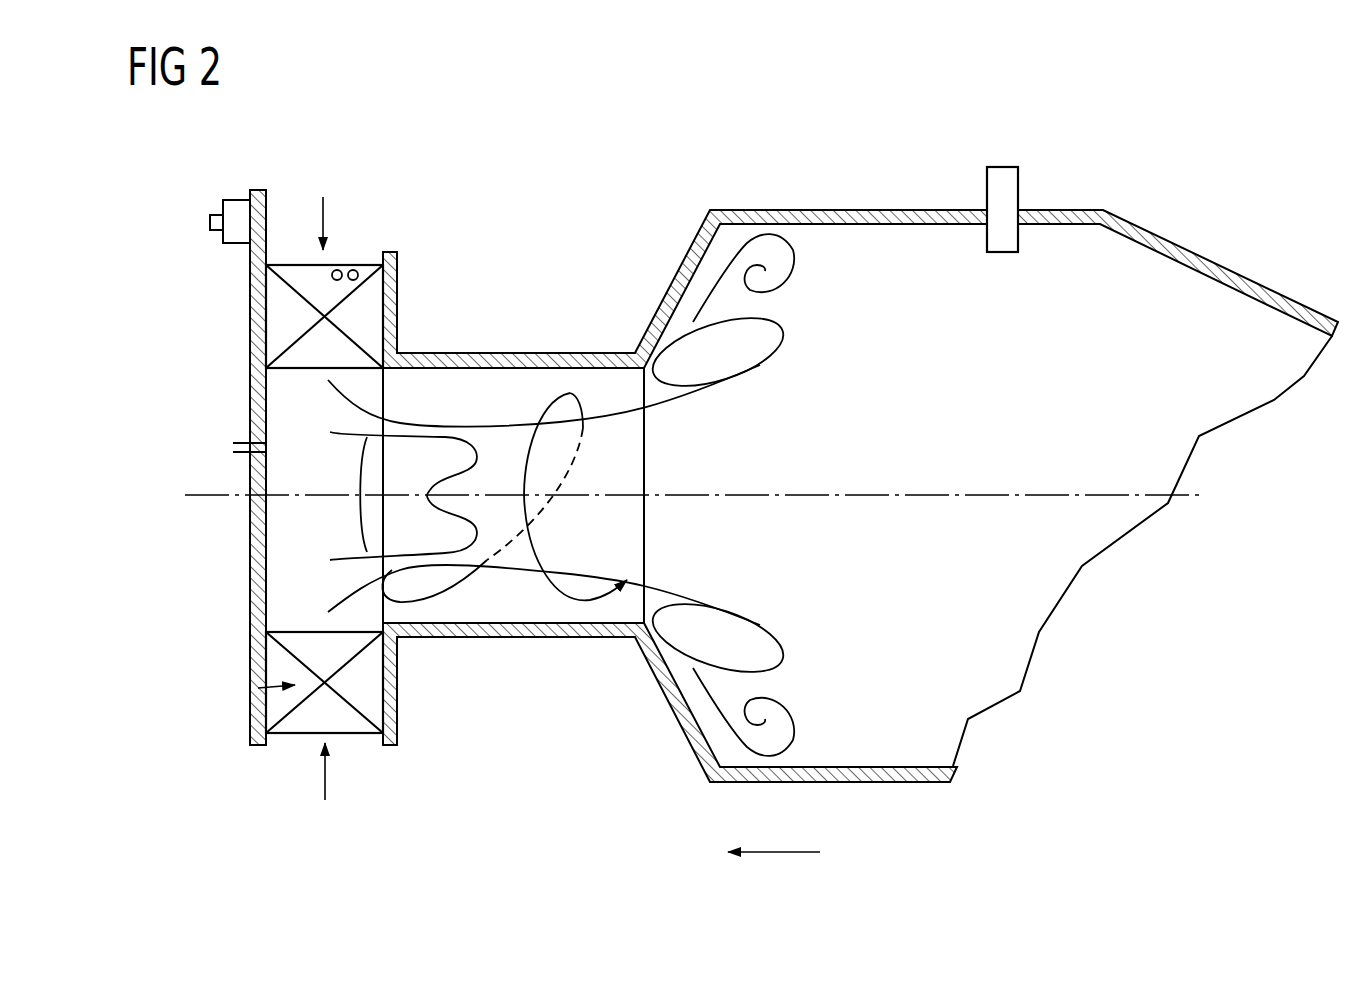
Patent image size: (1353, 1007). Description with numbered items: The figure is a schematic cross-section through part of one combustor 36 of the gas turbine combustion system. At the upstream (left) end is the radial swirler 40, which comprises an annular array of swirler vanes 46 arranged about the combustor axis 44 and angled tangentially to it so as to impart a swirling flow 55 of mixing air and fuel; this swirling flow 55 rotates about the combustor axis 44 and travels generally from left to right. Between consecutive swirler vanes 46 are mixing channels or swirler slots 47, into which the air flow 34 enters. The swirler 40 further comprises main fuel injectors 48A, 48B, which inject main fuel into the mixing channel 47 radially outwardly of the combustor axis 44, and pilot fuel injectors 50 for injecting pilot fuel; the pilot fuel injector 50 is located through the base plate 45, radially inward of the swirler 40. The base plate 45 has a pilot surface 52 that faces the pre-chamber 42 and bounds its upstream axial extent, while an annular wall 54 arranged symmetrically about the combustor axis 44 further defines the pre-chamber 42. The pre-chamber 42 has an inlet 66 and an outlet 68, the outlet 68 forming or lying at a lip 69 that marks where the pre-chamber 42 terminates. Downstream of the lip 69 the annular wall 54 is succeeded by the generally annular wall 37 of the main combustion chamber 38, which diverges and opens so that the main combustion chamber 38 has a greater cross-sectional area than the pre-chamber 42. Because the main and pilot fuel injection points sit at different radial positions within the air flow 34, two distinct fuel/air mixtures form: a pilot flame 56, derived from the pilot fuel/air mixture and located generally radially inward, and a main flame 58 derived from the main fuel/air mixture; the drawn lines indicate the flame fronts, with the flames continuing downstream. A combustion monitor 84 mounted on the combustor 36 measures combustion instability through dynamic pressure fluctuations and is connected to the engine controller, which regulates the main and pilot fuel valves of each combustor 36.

The air flow 34 is at (323, 200).
The combustor 36 is at (1240, 215).
The annular wall of the main combustion chamber 37 is at (855, 783).
The main combustion chamber 38 is at (904, 305).
The radial swirler 40 is at (258, 688).
The pre-chamber 42 is at (538, 612).
The combustor axis 44 is at (205, 495).
The base plate 45 is at (258, 601).
The swirler vanes 46 is at (272, 665).
The mixing channel 47 is at (375, 318).
The main fuel injector 48A is at (210, 225).
The main fuel injector 48B is at (337, 269).
The pilot fuel injector 50 is at (233, 446).
The pilot surface 52 is at (268, 557).
The annular wall 54 is at (603, 625).
The swirling flow 55 is at (448, 592).
The pilot flame 56 is at (473, 443).
The main flame 58 is at (783, 336).
The inlet 66 is at (385, 405).
The outlet 68 is at (650, 392).
The lip 69 is at (650, 622).
The combustion monitor 84 is at (986, 182).